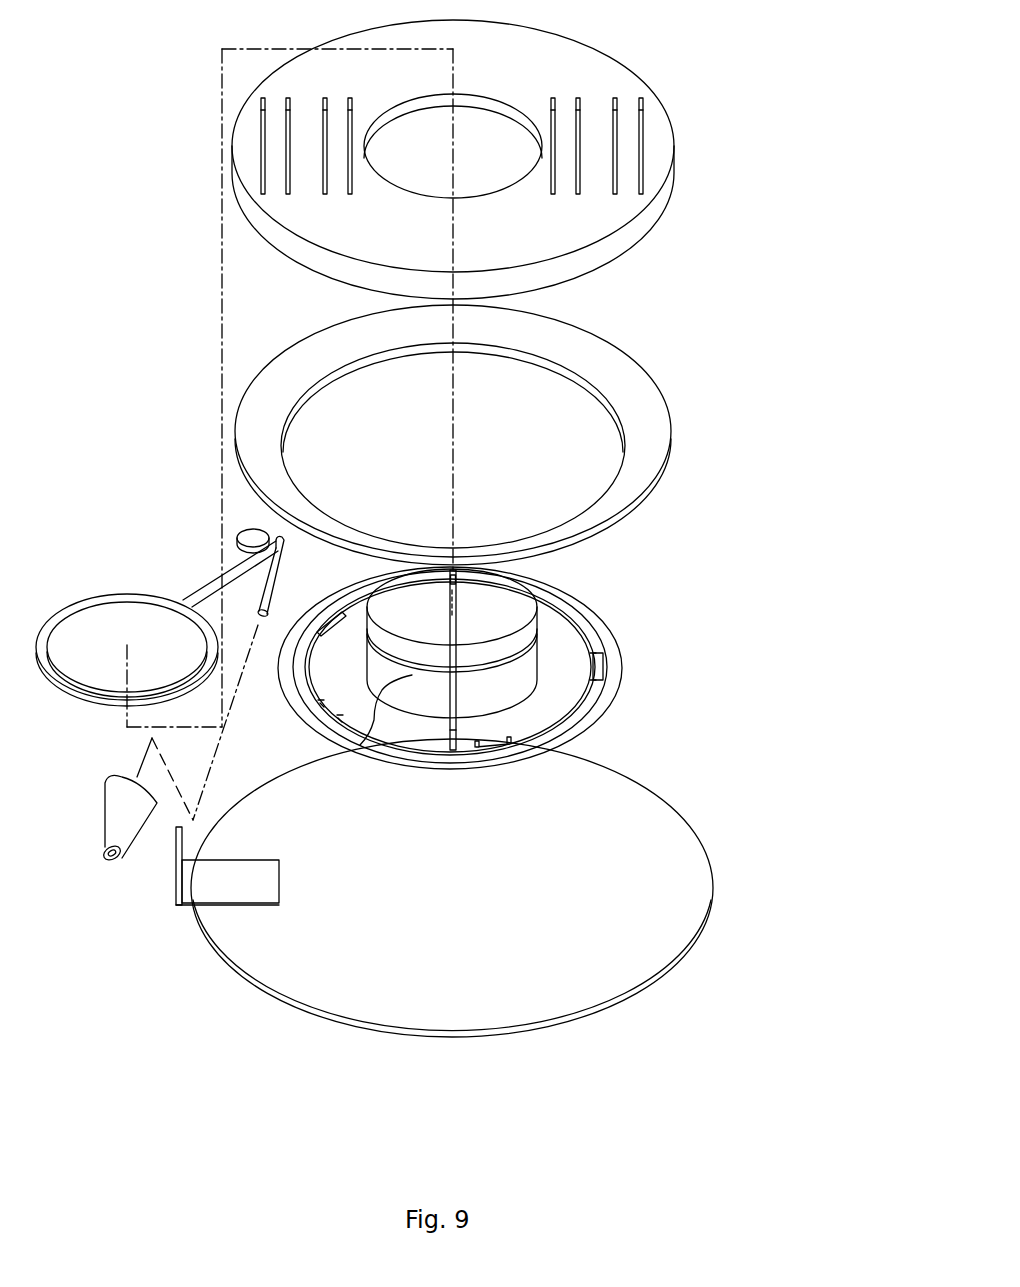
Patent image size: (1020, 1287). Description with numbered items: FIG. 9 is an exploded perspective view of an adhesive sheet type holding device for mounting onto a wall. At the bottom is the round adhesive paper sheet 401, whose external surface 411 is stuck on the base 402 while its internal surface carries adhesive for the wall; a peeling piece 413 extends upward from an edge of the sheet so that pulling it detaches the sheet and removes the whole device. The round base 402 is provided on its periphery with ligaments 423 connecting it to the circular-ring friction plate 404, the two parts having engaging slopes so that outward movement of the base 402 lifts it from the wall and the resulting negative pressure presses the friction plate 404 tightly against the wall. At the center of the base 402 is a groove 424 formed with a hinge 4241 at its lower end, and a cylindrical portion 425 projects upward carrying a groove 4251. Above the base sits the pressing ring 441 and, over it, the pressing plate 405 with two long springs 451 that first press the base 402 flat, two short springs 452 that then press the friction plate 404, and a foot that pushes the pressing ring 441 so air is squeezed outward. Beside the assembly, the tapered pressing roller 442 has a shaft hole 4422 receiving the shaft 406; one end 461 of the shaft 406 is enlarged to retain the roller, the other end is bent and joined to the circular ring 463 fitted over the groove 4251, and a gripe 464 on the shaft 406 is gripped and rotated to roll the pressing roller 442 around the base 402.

The adhesive paper sheet 401 is at (472, 890).
The base 402 is at (487, 658).
The friction plate 404 is at (617, 652).
The pressing plate 405 is at (495, 71).
The shaft 406 is at (250, 565).
The external surface 411 is at (606, 907).
The peeling piece 413 is at (177, 878).
The ligaments 423 is at (603, 665).
The groove 424 is at (457, 631).
The cylindrical portion 425 is at (430, 631).
The pressing ring 441 is at (627, 476).
The pressing roller 442 is at (141, 820).
The long springs 451 is at (570, 118).
The short springs 452 is at (630, 122).
The end of the shaft 461 is at (258, 620).
The circular ring 463 is at (108, 595).
The gripe 464 is at (255, 533).
The hinge 4241 is at (455, 730).
The groove 4251 is at (363, 735).
The shaft hole 4422 is at (110, 851).